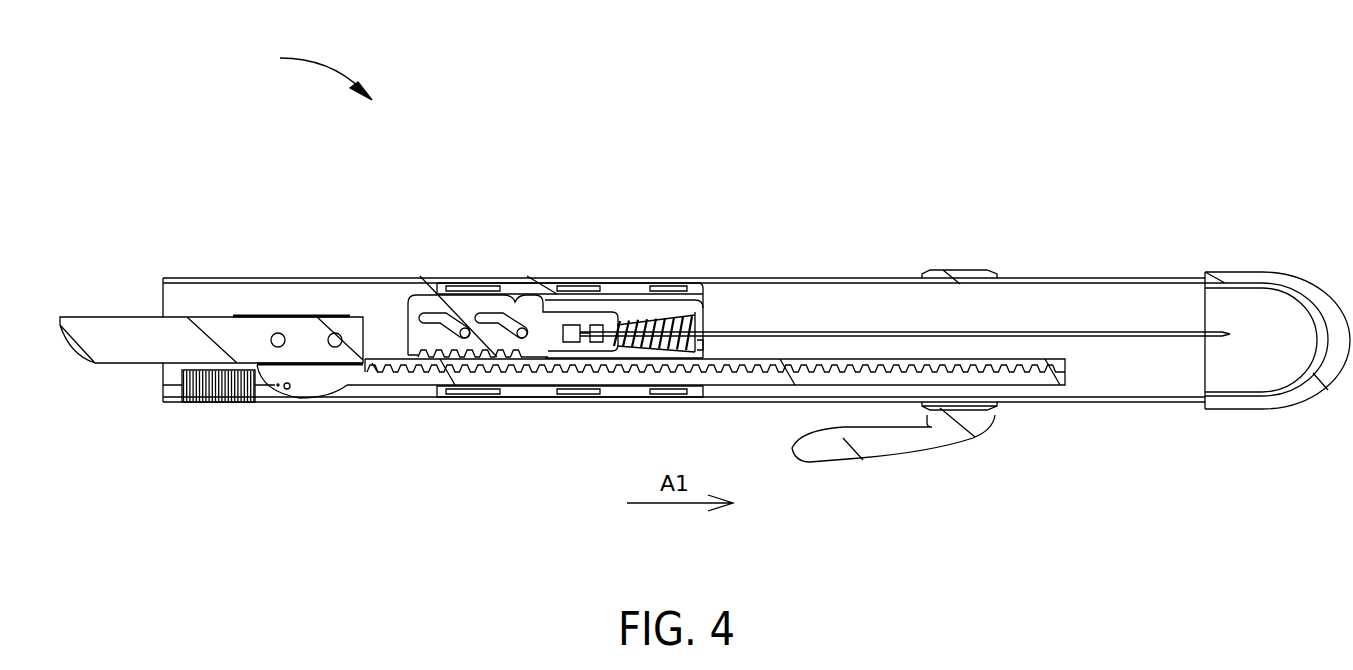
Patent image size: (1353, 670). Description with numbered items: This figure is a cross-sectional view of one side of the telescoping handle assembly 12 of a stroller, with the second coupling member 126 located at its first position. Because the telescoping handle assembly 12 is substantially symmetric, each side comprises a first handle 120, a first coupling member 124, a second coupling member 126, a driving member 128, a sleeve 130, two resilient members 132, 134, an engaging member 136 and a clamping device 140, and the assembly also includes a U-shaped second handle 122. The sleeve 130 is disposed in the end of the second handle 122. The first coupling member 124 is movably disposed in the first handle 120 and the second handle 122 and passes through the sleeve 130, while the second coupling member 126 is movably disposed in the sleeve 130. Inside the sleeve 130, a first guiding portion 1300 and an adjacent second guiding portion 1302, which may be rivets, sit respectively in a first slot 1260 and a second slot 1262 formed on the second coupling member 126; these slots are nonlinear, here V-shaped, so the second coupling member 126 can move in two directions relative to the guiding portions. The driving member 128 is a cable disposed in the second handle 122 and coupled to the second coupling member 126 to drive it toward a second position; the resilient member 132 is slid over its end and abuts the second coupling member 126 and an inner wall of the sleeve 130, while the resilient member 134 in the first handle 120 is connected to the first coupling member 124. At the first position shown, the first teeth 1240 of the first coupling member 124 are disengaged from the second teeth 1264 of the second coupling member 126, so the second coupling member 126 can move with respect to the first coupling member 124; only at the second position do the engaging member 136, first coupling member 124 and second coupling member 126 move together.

The telescoping handle assembly 12 is at (308, 76).
The first handle 120 is at (303, 278).
The second handle 122 is at (1118, 278).
The first coupling member 124 is at (698, 420).
The first teeth 1240 is at (418, 375).
The second coupling member 126 is at (408, 318).
The first slot 1260 is at (512, 313).
The second slot 1262 is at (430, 317).
The second teeth 1264 is at (538, 310).
The driving member 128 is at (852, 331).
The sleeve 130 is at (698, 305).
The first guiding portion 1300 is at (523, 338).
The second guiding portion 1302 is at (465, 338).
The resilient member 132 is at (690, 315).
The resilient member 134 is at (212, 405).
The engaging member 136 is at (128, 317).
The clamping device 140 is at (897, 448).